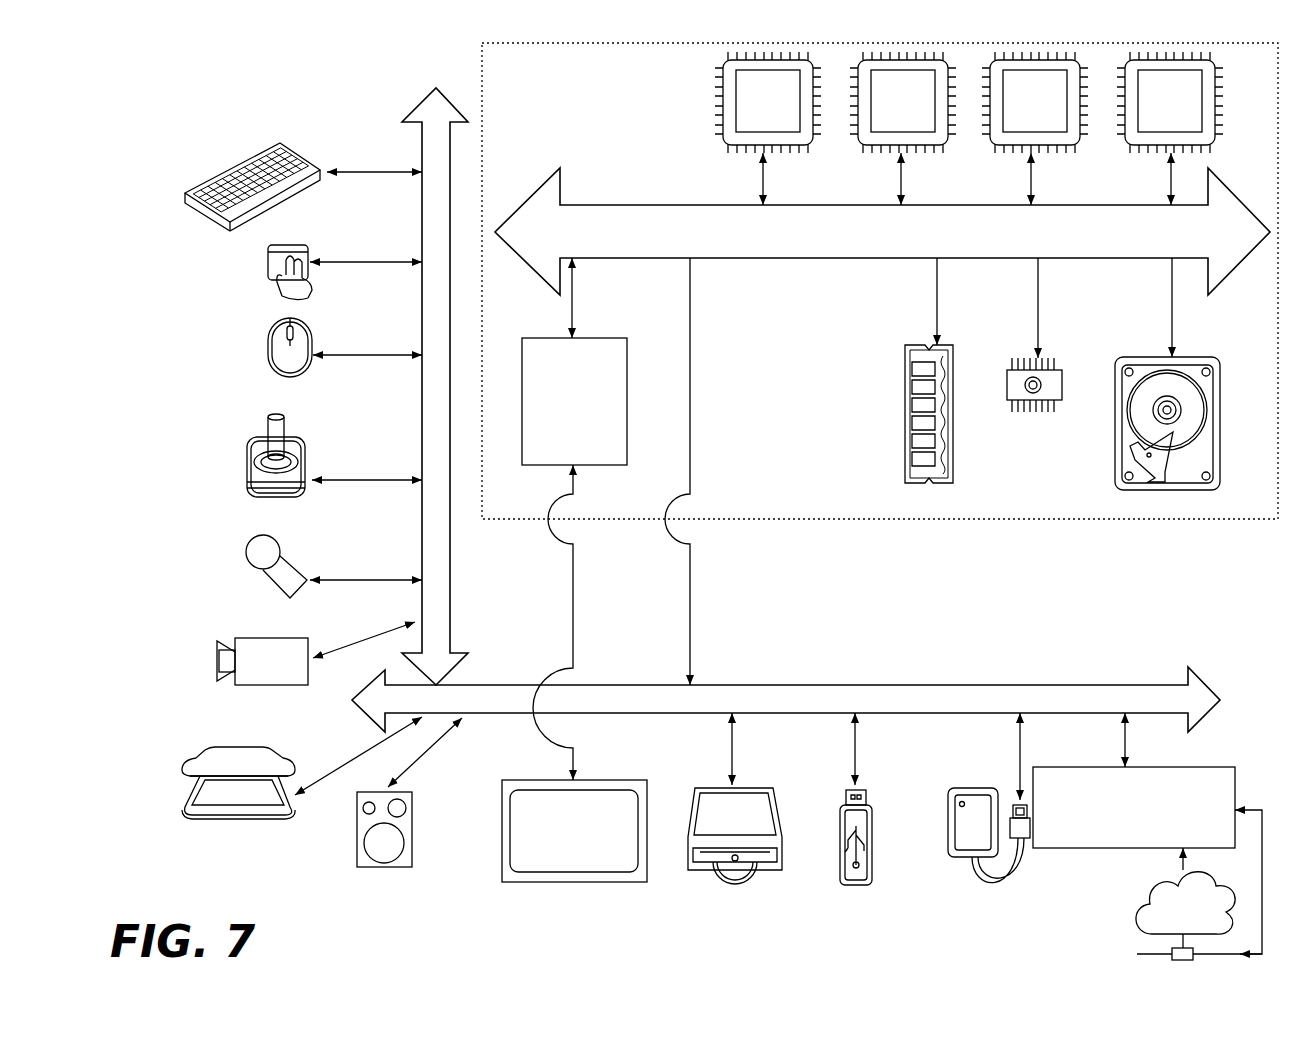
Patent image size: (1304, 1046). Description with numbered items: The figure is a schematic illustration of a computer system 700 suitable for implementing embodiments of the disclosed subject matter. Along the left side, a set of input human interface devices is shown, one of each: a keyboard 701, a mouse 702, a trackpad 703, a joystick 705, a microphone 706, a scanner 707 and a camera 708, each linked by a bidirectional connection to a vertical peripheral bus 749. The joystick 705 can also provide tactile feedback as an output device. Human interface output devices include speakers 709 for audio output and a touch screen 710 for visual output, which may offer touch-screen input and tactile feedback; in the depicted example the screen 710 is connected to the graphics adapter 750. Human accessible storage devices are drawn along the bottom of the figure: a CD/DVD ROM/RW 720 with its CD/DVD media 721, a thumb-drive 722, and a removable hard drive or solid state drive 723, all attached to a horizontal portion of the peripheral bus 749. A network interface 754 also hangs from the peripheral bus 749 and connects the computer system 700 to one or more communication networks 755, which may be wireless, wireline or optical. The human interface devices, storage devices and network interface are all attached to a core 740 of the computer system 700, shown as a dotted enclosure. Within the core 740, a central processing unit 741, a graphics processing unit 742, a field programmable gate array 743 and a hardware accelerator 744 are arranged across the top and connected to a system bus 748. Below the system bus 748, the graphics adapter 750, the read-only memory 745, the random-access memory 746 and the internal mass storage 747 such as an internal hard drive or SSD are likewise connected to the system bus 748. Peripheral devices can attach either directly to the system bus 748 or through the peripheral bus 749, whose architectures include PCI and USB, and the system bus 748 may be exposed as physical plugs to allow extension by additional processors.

The computer system 700 is at (233, 128).
The keyboard 701 is at (185, 198).
The mouse 702 is at (267, 343).
The trackpad 703 is at (267, 267).
The joystick 705 is at (247, 480).
The microphone 706 is at (247, 555).
The scanner 707 is at (185, 807).
The camera 708 is at (215, 667).
The speakers 709 is at (385, 867).
The touch screen 710 is at (572, 883).
The CD/DVD ROM/RW 720 is at (777, 872).
The CD/DVD media 721 is at (717, 880).
The thumb-drive 722 is at (860, 887).
The removable hard drive or solid state drive 723 is at (958, 860).
The core 740 is at (873, 520).
The central processing unit 741 is at (768, 128).
The graphics processing unit 742 is at (903, 128).
The field programmable gate array 743 is at (1035, 128).
The hardware accelerator 744 is at (1170, 128).
The read-only memory 745 is at (1025, 412).
The random-access memory 746 is at (900, 443).
The internal mass storage 747 is at (1127, 355).
The system bus 748 is at (882, 231).
The peripheral bus 749 is at (420, 135).
The graphics adapter 750 is at (574, 519).
The network interface 754 is at (1134, 780).
The communication network 755 is at (1138, 920).